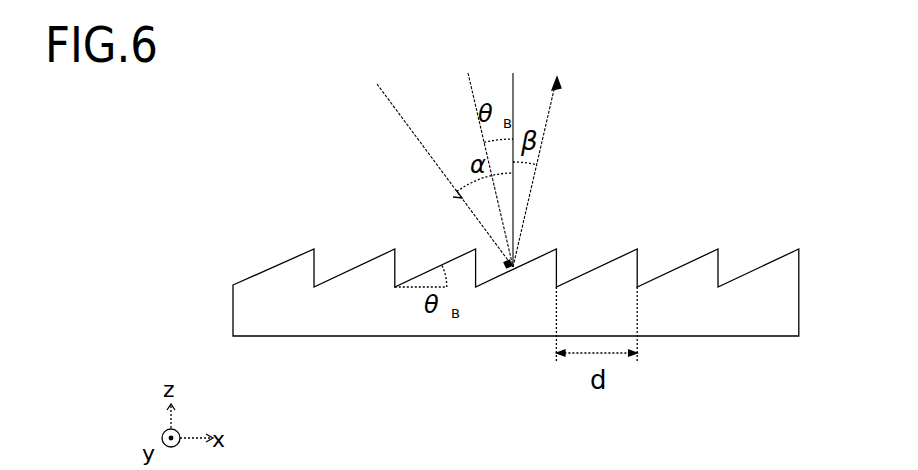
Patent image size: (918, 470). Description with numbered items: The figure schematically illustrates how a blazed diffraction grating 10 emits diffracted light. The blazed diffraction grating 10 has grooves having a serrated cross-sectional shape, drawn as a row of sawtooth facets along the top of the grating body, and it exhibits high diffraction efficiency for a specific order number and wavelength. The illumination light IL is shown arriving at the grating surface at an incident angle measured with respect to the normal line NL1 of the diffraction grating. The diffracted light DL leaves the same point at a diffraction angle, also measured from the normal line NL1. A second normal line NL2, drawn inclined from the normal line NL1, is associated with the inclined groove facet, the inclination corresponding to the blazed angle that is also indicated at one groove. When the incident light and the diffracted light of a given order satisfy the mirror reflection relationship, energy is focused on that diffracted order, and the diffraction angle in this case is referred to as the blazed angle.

The blazed diffraction grating 10 is at (245, 315).
The normal line of the diffraction grating NL1 is at (516, 82).
The normal line of blaze facet NL2 is at (472, 90).
The illumination light IL is at (395, 107).
The diffracted light DL is at (551, 107).